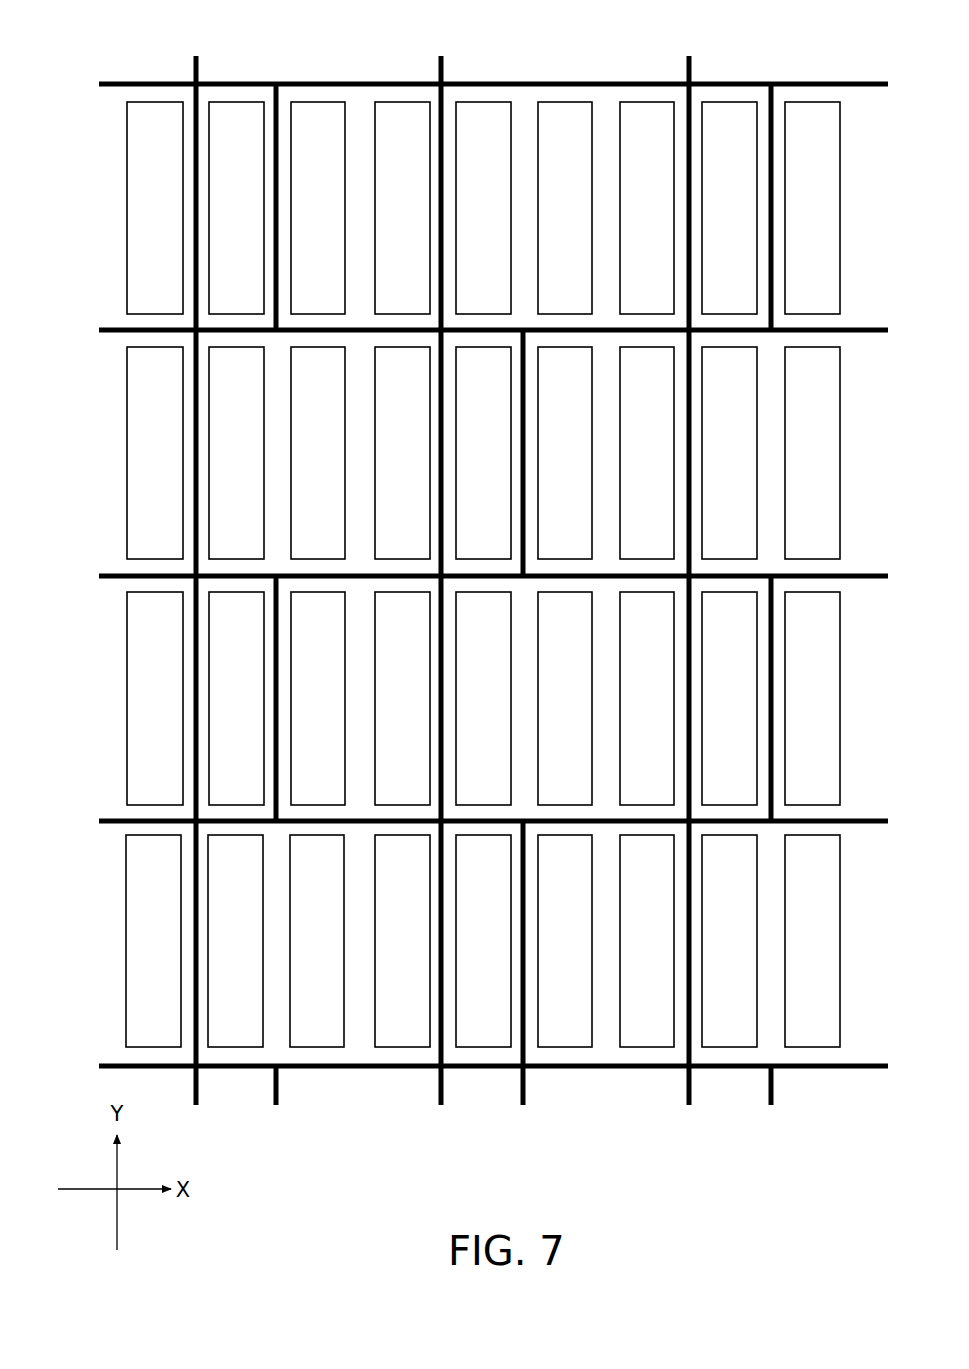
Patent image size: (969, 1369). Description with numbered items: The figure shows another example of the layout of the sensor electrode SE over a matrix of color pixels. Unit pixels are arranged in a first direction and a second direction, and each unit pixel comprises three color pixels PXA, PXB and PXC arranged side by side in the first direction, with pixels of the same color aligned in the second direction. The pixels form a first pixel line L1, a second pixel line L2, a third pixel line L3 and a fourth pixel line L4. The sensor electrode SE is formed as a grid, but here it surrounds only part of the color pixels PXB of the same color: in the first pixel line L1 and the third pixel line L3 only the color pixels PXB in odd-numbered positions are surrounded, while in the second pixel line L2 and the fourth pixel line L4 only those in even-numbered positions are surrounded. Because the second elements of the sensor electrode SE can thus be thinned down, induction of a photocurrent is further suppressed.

The sensor electrode SE is at (108, 76).
The first pixel line L1 is at (110, 245).
The second pixel line L2 is at (110, 490).
The third pixel line L3 is at (110, 733).
The fourth pixel line L4 is at (110, 965).
The color pixel PXA is at (400, 574).
The color pixel PXB is at (482, 574).
The color pixel PXC is at (565, 574).